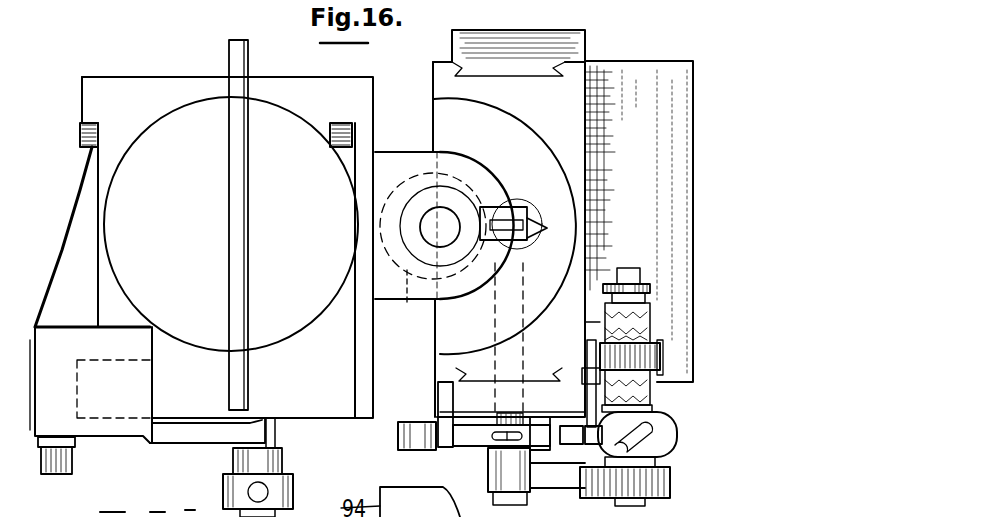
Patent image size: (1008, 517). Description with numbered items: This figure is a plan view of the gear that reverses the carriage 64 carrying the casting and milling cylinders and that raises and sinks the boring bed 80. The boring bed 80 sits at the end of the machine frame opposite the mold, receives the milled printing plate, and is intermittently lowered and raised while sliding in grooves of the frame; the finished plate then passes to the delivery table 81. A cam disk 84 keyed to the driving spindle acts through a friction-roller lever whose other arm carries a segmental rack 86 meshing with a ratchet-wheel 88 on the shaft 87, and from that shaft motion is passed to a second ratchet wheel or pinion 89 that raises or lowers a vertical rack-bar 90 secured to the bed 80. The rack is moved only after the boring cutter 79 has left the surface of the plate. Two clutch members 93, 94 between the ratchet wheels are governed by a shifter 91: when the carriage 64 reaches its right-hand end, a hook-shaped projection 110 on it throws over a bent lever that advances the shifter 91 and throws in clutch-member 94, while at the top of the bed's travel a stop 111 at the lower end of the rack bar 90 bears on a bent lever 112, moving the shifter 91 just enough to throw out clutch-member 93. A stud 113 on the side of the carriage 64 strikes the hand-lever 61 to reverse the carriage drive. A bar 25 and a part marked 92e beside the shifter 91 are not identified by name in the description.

The vertical bar 25 is at (250, 58).
The hand-lever 61 is at (285, 451).
The carriage 64 is at (108, 430).
The boring cutter 79 is at (548, 218).
The boring bed 80 is at (575, 162).
The delivery table 81 is at (678, 193).
The cam disk 84 is at (464, 242).
The segmental rack 86 is at (532, 485).
The shaft 87 is at (593, 321).
The ratchet-wheel 88 is at (667, 474).
The ratchet wheel (pinion) 89 is at (657, 352).
The rack-bar 90 is at (592, 360).
The shifter 91 is at (470, 440).
The nut 92e is at (408, 441).
The clutch-member 93 is at (652, 287).
The clutch-member 94 is at (690, 392).
The hook-shaped projection 110 is at (215, 437).
The stop 111 is at (585, 378).
The bent lever 112 is at (565, 430).
The stud 113 is at (65, 475).